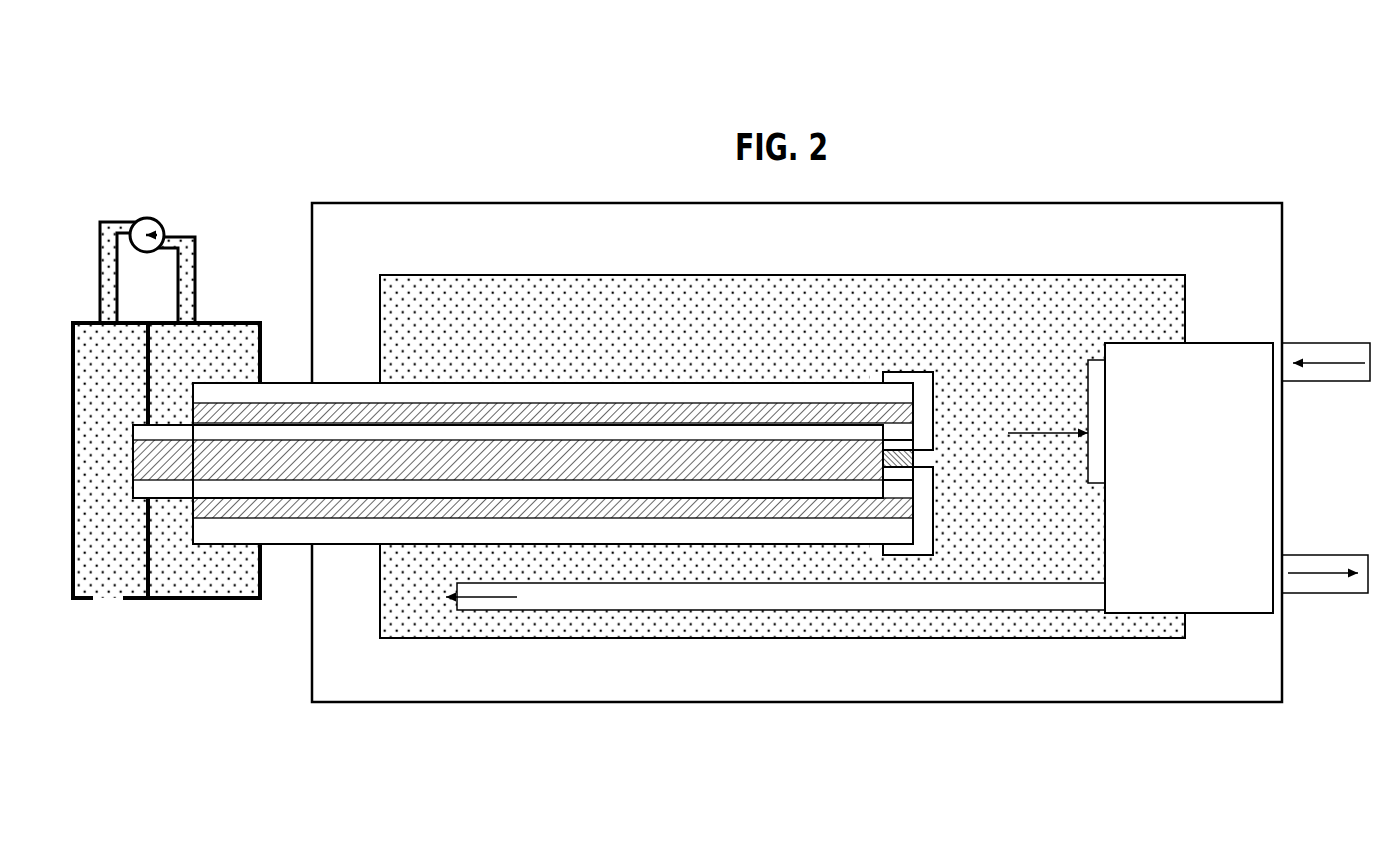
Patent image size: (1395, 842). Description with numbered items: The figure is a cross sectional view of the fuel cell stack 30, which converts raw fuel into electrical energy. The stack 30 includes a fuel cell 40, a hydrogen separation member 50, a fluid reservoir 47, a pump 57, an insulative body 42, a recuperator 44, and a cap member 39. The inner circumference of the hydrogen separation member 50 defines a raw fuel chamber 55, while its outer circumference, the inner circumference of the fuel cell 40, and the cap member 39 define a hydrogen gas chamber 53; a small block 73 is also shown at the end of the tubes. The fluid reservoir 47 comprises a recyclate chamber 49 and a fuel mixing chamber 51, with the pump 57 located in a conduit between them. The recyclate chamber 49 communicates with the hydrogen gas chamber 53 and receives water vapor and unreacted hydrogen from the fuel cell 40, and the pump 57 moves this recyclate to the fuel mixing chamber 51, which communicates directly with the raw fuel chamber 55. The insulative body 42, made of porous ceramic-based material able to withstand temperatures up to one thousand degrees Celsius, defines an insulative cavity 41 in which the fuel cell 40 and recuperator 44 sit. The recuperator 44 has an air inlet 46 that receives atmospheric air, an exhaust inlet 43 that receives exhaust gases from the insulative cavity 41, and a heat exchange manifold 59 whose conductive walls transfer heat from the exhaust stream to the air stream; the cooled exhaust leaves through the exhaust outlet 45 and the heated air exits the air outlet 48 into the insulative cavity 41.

The fuel cell stack 30 is at (276, 222).
The cap member 39 is at (932, 375).
The fuel cell 40 is at (600, 380).
The insulative cavity 41 is at (870, 310).
The insulative body 42 is at (1195, 246).
The exhaust inlet 43 is at (1094, 390).
The recuperator 44 is at (1258, 444).
The exhaust outlet 45 is at (1327, 585).
The air inlet 46 is at (1330, 355).
The fluid reservoir 47 is at (79, 318).
The air outlet 48 is at (500, 600).
The recyclate chamber 49 is at (177, 565).
The hydrogen separation member 50 is at (742, 424).
The fuel mixing chamber 51 is at (90, 570).
The hydrogen gas chamber 53 is at (473, 413).
The raw fuel chamber 55 is at (562, 470).
The pump 57 is at (163, 220).
The heat exchange manifold 59 is at (1262, 492).
The seal block 73 is at (915, 457).